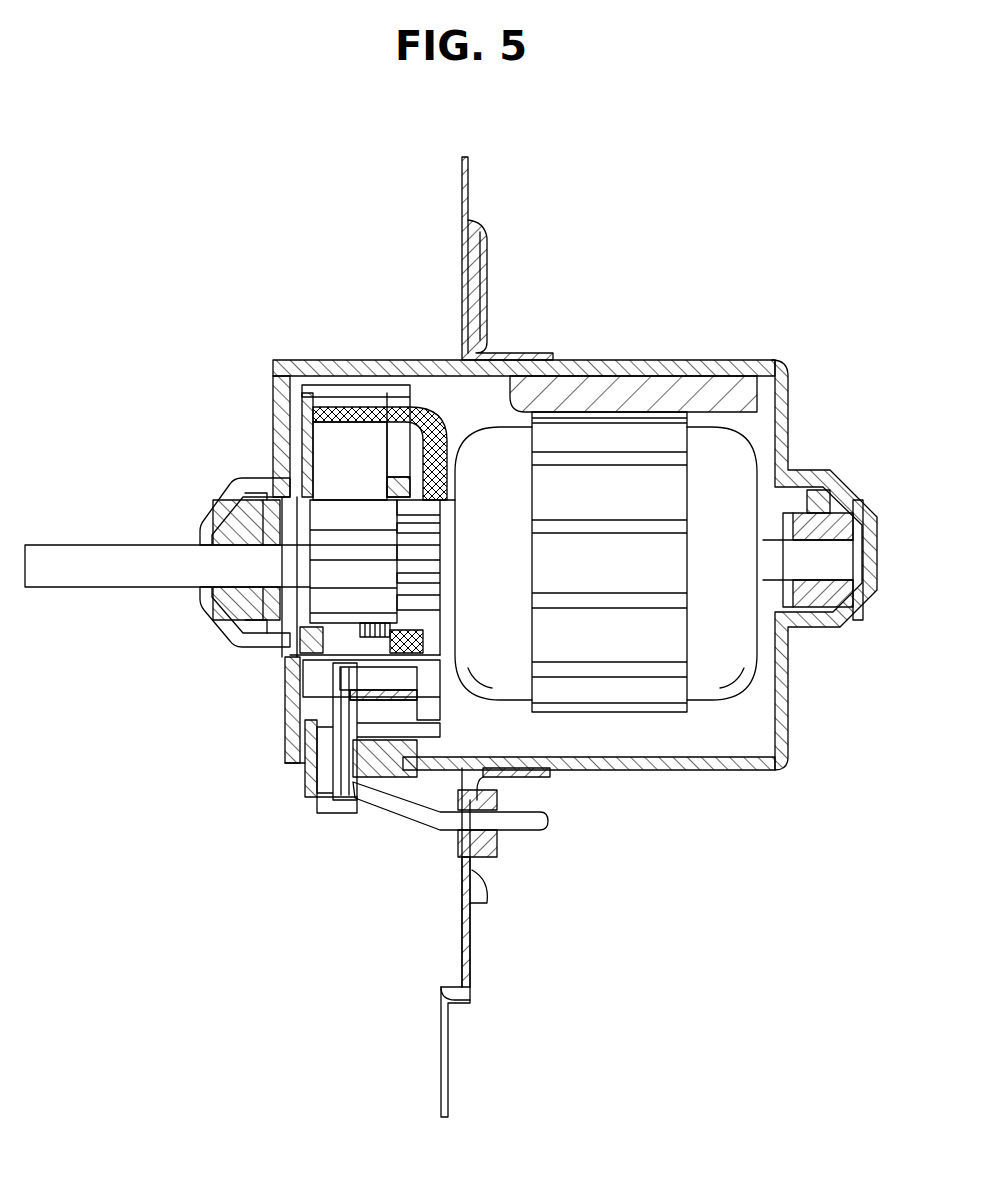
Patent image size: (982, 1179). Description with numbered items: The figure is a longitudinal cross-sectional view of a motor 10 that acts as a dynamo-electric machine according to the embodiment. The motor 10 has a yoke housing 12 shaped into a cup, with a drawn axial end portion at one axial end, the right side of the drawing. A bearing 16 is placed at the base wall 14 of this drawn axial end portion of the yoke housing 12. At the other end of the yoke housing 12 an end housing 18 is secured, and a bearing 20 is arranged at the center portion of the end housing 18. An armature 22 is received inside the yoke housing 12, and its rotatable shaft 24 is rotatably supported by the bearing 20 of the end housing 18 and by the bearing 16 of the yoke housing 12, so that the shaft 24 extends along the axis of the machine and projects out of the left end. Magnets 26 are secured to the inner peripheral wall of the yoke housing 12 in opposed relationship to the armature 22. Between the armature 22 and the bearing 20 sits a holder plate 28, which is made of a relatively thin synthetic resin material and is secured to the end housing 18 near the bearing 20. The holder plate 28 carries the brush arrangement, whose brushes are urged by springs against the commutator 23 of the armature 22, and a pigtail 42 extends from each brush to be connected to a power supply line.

The motor 10 is at (256, 311).
The yoke housing 12 is at (607, 367).
The base wall 14 is at (790, 422).
The bearing 16 is at (840, 507).
The end housing 18 is at (277, 427).
The bearing 20 is at (233, 520).
The armature 22 is at (643, 687).
The commutator 23 is at (355, 520).
The rotatable shaft 24 is at (117, 558).
The magnets 26 is at (665, 395).
The holder plate 28 is at (307, 460).
The pigtail 42 is at (428, 437).